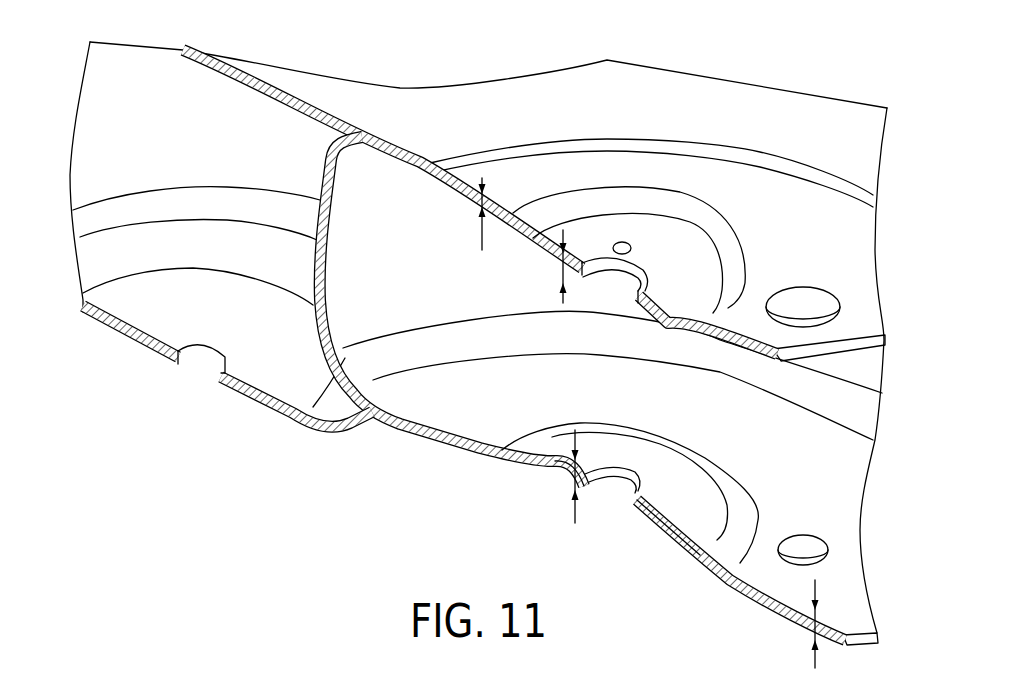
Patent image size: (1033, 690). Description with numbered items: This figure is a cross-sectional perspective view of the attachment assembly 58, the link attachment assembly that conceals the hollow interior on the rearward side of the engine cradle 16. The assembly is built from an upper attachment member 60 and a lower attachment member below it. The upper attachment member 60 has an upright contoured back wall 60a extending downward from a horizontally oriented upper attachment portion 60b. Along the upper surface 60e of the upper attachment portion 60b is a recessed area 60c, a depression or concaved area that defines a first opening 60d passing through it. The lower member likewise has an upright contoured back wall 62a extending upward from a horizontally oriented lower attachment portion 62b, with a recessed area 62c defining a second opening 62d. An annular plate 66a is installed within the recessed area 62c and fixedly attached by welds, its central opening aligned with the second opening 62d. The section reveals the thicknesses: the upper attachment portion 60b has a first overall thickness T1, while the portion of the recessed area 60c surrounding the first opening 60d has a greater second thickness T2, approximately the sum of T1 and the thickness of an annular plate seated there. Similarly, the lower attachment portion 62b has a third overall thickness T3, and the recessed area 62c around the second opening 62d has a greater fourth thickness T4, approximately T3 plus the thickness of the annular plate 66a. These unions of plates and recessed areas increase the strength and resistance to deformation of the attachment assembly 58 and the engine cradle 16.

The engine cradle 16 is at (627, 100).
The attachment assembly 58 is at (690, 173).
The upper attachment member 60 is at (843, 250).
The contoured back wall 60a is at (377, 213).
The upper attachment portion 60b is at (732, 183).
The recessed area 60c is at (697, 280).
The first opening 60d is at (607, 270).
The upper surface 60e is at (523, 177).
The contoured back wall 62a is at (353, 320).
The lower attachment portion 62b is at (455, 395).
The recessed area 62c is at (492, 455).
The second opening 62d is at (613, 470).
The annular plate 66a is at (652, 505).
The first overall thickness T1 is at (482, 240).
The second thickness T2 is at (563, 297).
The third overall thickness T3 is at (815, 657).
The fourth thickness T4 is at (575, 509).